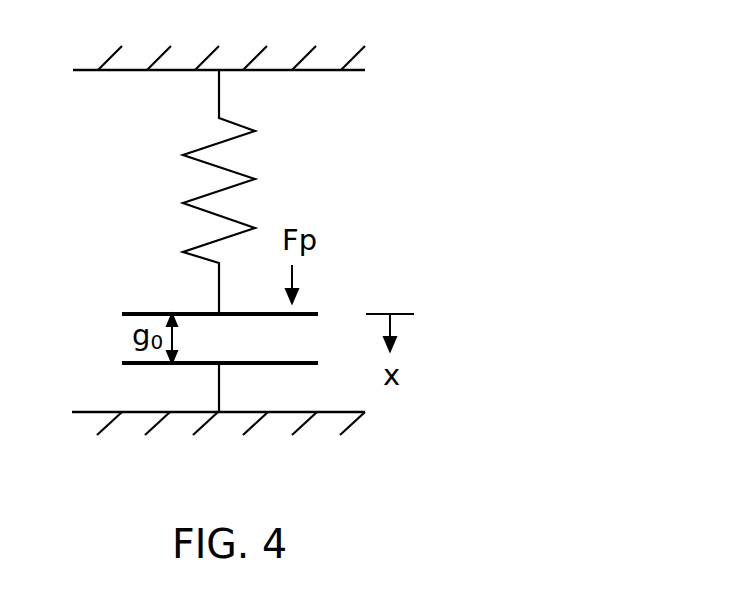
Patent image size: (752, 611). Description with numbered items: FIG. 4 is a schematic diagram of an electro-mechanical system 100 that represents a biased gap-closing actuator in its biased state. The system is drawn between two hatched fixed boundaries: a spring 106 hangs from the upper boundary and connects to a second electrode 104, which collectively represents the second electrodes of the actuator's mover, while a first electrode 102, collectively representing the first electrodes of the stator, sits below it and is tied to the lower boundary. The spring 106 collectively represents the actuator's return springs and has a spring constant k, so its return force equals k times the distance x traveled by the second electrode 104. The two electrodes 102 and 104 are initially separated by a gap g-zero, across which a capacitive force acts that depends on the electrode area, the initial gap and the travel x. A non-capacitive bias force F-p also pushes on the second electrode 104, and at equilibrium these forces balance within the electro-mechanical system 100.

The electro-mechanical system 100 is at (443, 72).
The first electrode 102 is at (152, 365).
The second electrode 104 is at (152, 312).
The spring 106 is at (238, 150).